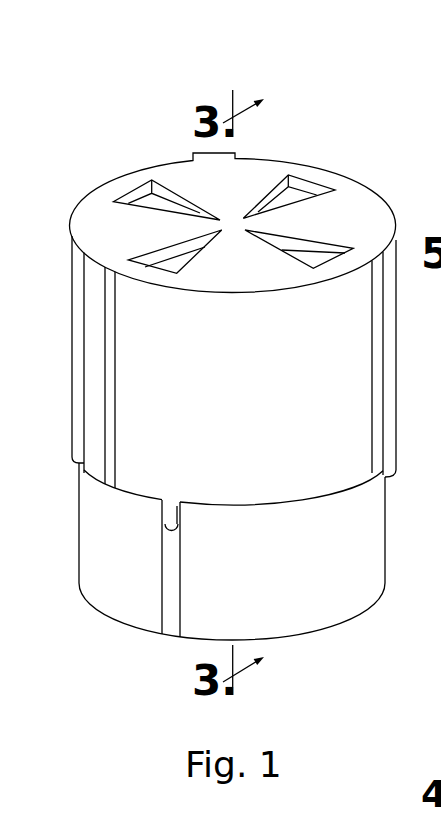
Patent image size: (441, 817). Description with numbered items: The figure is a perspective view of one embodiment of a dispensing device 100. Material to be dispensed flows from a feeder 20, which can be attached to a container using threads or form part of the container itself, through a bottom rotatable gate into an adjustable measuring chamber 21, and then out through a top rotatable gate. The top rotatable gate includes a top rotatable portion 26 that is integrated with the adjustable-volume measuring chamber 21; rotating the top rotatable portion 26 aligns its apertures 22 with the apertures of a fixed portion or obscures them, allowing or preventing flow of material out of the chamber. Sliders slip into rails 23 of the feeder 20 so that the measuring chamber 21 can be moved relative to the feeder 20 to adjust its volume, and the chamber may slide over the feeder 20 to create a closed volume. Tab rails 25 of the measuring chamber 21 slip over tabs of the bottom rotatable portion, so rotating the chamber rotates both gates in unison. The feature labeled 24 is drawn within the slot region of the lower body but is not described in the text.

The dispensing device 100 is at (256, 32).
The feeder 20 is at (300, 610).
The adjustable measuring chamber 21 is at (326, 430).
The apertures 22 is at (298, 197).
The rails 23 is at (170, 587).
The recess in slot 24 is at (173, 512).
The tab rails 25 is at (92, 360).
The top rotatable portion 26 is at (193, 183).